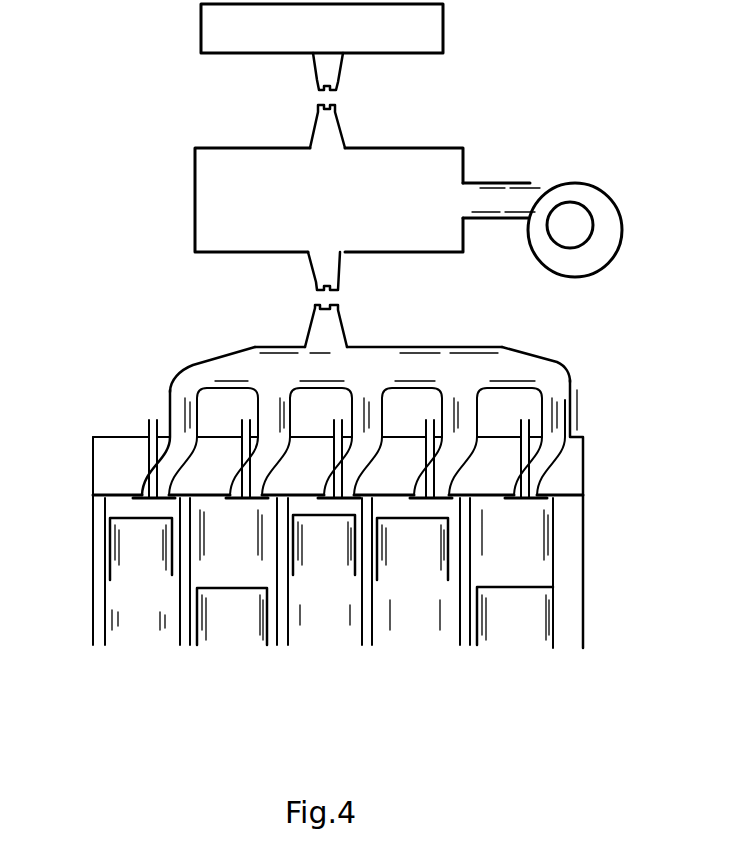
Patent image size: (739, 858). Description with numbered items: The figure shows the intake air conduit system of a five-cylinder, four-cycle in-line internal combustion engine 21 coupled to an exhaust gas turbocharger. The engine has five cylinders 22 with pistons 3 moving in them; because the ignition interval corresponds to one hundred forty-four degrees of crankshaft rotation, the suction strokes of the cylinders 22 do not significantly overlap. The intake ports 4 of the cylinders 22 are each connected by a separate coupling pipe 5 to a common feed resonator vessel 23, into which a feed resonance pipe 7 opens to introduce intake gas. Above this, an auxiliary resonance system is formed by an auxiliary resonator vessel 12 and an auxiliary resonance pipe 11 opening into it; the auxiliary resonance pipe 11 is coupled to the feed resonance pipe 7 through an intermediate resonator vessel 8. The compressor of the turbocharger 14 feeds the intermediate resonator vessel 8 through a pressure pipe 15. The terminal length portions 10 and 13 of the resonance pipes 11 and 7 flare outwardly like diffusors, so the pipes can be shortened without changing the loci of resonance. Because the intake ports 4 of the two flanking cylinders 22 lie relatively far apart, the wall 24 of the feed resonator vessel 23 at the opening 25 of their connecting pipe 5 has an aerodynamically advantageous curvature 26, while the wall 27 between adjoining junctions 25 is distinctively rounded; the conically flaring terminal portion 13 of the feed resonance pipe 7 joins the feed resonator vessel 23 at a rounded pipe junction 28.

The auxiliary resonator vessel 12 is at (213, 26).
The terminal length portion 10 is at (333, 60).
The auxiliary resonance pipe 11 is at (318, 112).
The intermediate resonator vessel 8 is at (224, 150).
The pressure pipe 15 is at (500, 220).
The turbocharger 14 is at (590, 255).
The feed resonance pipe 7 is at (316, 284).
The terminal length portion 13 is at (342, 262).
The rounded pipe junction 28 is at (350, 345).
The feed resonator vessel 23 is at (207, 372).
The wall 24 is at (537, 352).
The curvature 26 is at (572, 382).
The coupling pipe 5 is at (178, 403).
The opening 25 is at (273, 392).
The wall 27 is at (305, 390).
The intake port 4 is at (147, 467).
The internal combustion engine 21 is at (93, 613).
The piston 3 is at (107, 547).
The cylinder 22 is at (173, 625).